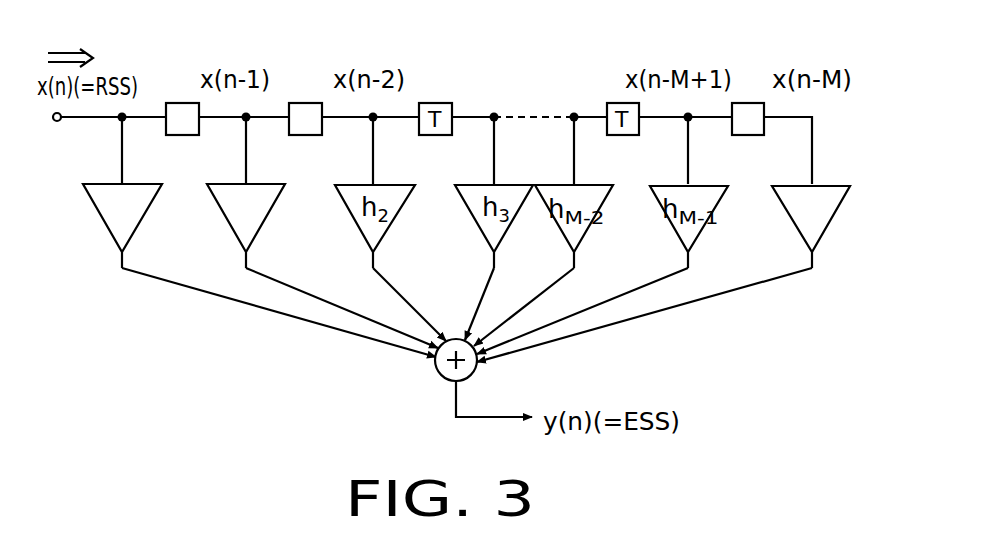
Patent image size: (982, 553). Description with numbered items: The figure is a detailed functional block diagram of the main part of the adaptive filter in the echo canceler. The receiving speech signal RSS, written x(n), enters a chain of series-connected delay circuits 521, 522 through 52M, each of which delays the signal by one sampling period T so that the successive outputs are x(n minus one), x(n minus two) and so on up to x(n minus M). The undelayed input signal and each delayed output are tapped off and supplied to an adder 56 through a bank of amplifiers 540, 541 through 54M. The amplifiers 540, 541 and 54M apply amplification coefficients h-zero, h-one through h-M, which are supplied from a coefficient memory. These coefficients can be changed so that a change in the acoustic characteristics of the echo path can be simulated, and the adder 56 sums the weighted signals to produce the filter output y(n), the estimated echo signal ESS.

The delay circuit 521 is at (181, 103).
The delay circuit 522 is at (304, 103).
The delay circuit 52M is at (770, 105).
The amplifier 540 is at (98, 208).
The amplifier 541 is at (262, 226).
The amplifier 54M is at (838, 166).
The adder 56 is at (436, 368).